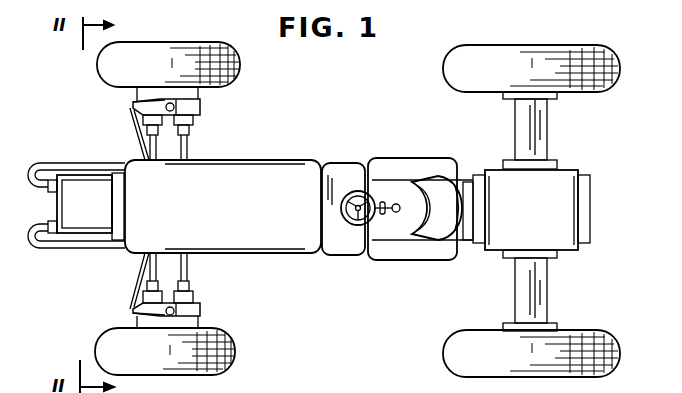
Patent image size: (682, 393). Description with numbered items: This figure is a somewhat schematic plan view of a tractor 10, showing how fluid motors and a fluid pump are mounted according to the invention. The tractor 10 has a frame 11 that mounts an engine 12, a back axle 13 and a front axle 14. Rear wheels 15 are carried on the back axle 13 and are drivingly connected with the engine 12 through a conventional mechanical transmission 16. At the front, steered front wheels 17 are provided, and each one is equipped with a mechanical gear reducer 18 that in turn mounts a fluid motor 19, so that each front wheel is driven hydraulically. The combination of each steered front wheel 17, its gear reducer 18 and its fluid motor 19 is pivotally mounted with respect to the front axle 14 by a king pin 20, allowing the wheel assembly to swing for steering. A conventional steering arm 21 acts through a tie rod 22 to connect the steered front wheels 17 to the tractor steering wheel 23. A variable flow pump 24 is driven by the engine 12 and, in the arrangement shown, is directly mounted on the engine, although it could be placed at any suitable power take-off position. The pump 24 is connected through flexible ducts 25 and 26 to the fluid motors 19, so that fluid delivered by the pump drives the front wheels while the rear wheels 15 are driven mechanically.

The tractor 10 is at (311, 153).
The frame 11 is at (402, 183).
The engine 12 is at (294, 242).
The back axle 13 is at (533, 127).
The front axle 14 is at (170, 151).
The rear wheels 15 is at (615, 52).
The mechanical transmission 16 is at (570, 202).
The steered front wheels 17 is at (238, 58).
The mechanical gear reducer 18 is at (190, 105).
The fluid motor 19 is at (184, 125).
The king pin 20 is at (199, 100).
The steering arm 21 is at (133, 104).
The tie rod 22 is at (138, 138).
The steering wheel 23 is at (344, 229).
The variable flow pump 24 is at (62, 205).
The flexible duct 25 is at (43, 162).
The flexible duct 26 is at (50, 252).